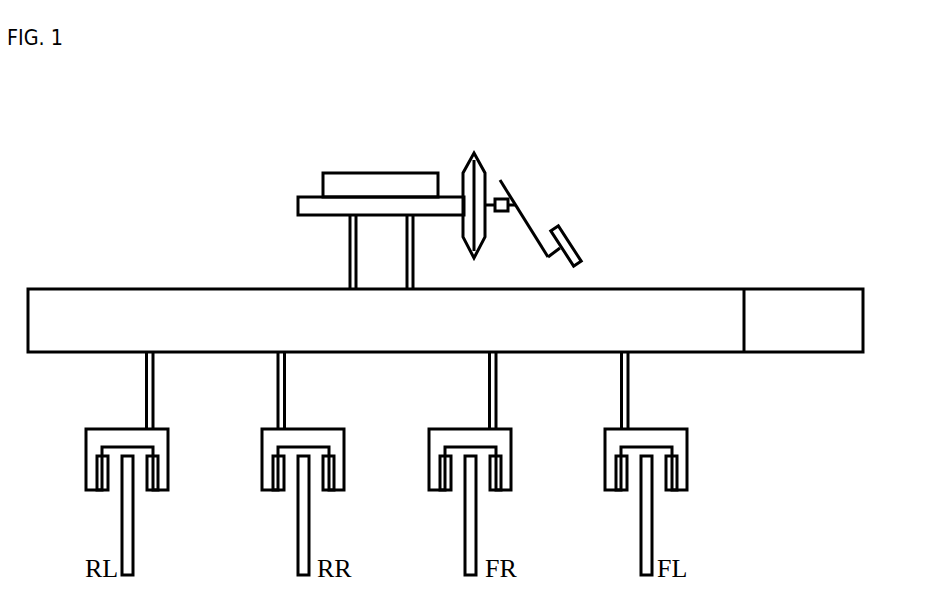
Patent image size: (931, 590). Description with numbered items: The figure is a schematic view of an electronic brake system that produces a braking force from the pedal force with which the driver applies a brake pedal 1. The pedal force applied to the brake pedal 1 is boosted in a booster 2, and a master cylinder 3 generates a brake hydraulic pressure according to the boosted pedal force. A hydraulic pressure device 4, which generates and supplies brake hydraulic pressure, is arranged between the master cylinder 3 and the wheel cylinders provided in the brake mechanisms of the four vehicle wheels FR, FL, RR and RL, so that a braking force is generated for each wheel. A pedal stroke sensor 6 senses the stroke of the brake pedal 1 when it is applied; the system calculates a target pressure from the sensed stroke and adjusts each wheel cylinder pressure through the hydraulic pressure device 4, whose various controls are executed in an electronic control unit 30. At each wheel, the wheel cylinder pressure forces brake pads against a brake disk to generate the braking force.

The brake pedal 1 is at (569, 236).
The booster 2 is at (481, 168).
The master cylinder 3 is at (303, 196).
The hydraulic pressure device 4 is at (714, 288).
The pedal stroke sensor 6 is at (500, 212).
The electronic control unit (ECU) 30 is at (834, 288).